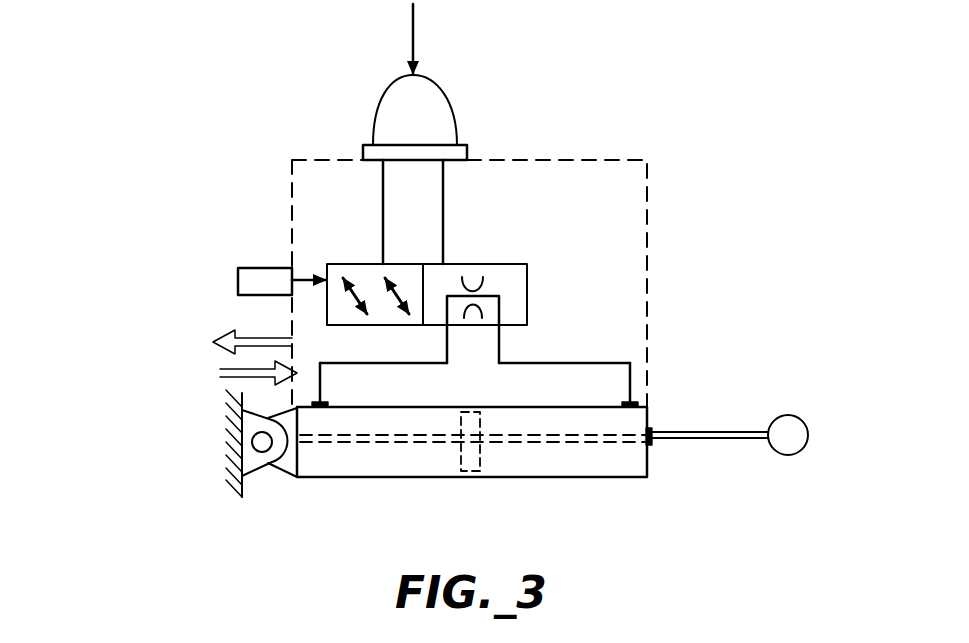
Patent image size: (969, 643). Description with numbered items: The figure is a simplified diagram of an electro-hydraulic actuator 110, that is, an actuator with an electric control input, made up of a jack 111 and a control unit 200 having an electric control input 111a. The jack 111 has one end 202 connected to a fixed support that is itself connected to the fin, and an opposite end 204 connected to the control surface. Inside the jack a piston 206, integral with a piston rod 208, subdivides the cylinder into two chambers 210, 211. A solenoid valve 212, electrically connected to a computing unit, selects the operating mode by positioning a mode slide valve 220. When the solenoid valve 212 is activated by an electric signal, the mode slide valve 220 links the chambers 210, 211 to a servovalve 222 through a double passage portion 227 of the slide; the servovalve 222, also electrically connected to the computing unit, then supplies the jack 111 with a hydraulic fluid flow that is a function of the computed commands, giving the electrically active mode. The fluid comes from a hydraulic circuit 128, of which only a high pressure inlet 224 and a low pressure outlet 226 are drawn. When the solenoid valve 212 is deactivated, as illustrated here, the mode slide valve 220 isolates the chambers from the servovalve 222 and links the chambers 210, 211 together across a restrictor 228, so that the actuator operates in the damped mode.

The electric control input 111a is at (370, 95).
The servovalve 222 is at (437, 133).
The control unit 200 is at (290, 165).
The solenoid valve 212 is at (256, 278).
The double passage portion 227 is at (363, 275).
The mode slide valve 220 is at (501, 259).
The restrictor 228 is at (484, 287).
The actuator 110 is at (674, 271).
The hydraulic circuit 128 is at (256, 330).
The low pressure outlet 226 is at (247, 350).
The high pressure inlet 224 is at (227, 378).
The end of the jack 202 is at (276, 465).
The chamber 210 is at (367, 460).
The jack 111 is at (426, 480).
The piston 206 is at (477, 463).
The chamber 211 is at (585, 460).
The piston rod 208 is at (690, 438).
The end of the jack 204 is at (790, 447).